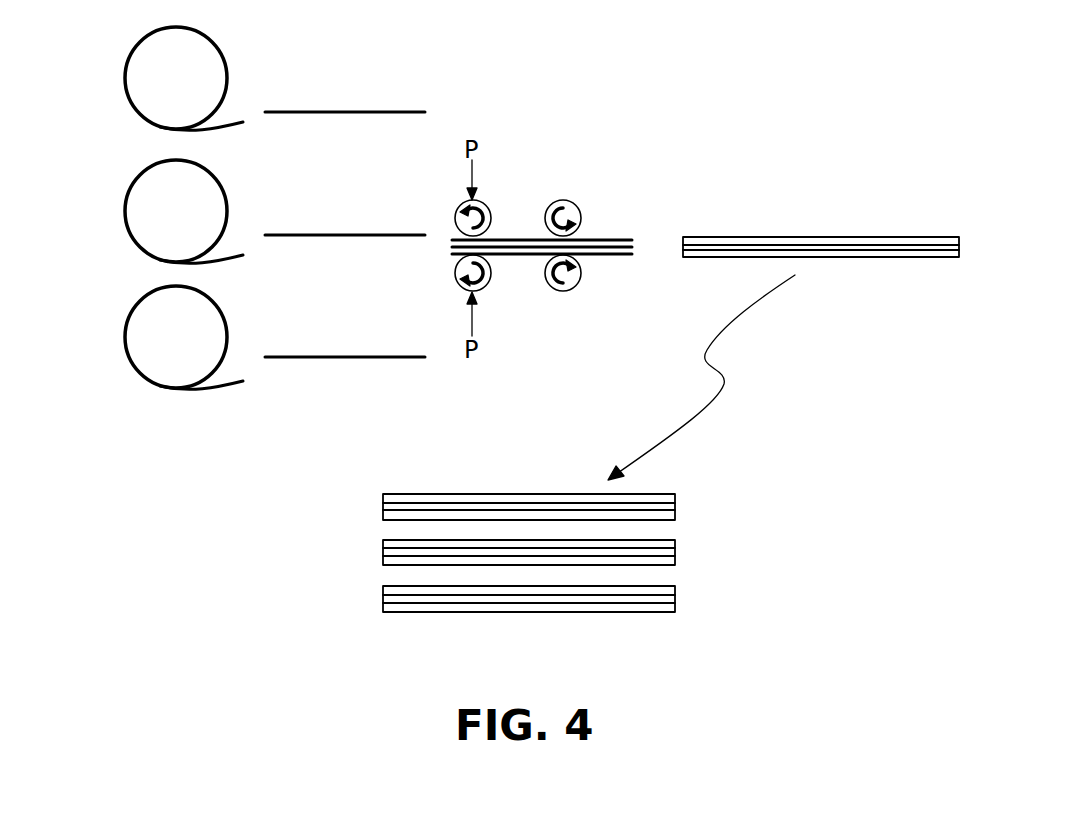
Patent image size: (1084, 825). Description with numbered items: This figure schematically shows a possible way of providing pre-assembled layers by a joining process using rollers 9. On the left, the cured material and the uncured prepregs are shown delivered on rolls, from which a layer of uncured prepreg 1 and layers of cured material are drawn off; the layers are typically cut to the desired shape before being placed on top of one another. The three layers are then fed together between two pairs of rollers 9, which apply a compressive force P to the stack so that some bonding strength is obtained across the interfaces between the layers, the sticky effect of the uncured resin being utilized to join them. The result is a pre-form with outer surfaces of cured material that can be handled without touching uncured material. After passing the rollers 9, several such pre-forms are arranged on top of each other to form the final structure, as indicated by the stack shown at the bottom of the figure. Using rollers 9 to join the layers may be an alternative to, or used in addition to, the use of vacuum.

The uncured prepreg 1 is at (332, 233).
The rollers 9 is at (553, 205).